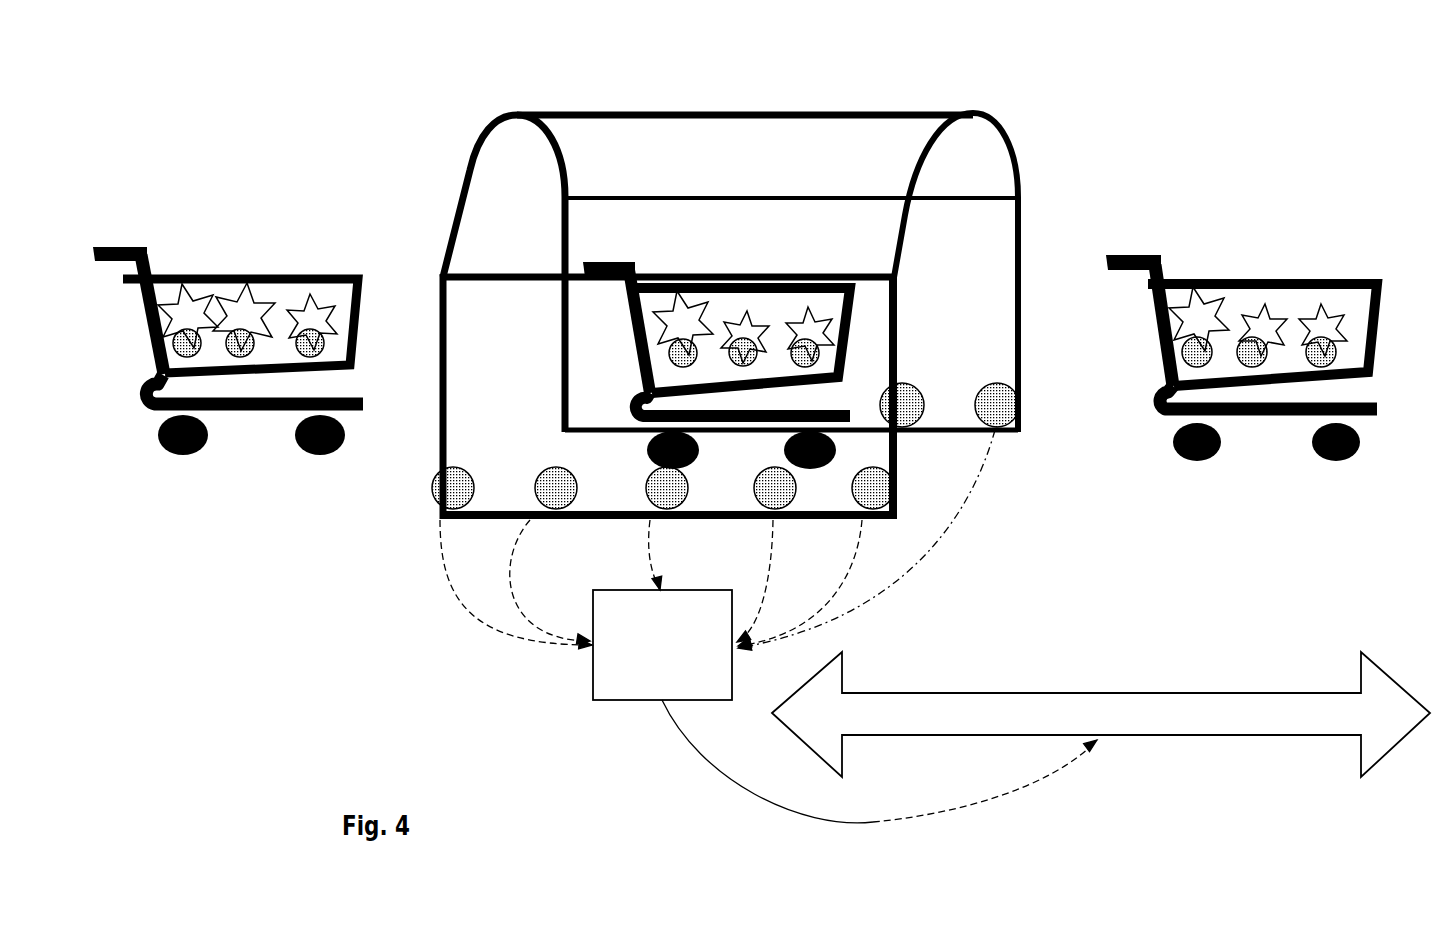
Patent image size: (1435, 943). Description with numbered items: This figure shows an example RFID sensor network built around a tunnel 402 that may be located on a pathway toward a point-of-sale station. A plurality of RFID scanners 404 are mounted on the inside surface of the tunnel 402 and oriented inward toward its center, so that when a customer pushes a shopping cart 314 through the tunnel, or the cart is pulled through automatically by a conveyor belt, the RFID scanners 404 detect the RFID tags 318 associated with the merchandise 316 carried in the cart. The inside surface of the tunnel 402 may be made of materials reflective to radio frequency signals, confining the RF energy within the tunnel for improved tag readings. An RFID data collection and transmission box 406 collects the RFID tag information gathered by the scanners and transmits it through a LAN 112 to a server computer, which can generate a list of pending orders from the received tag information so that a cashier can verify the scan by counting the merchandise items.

The shopping cart 314 is at (108, 245).
The merchandise 316 is at (197, 313).
The RFID tags 318 is at (298, 338).
The tunnel 402 is at (835, 113).
The RFID scanners 404 is at (997, 412).
The RFID data collection and transmission box 406 is at (768, 626).
The LAN 112 is at (1101, 714).